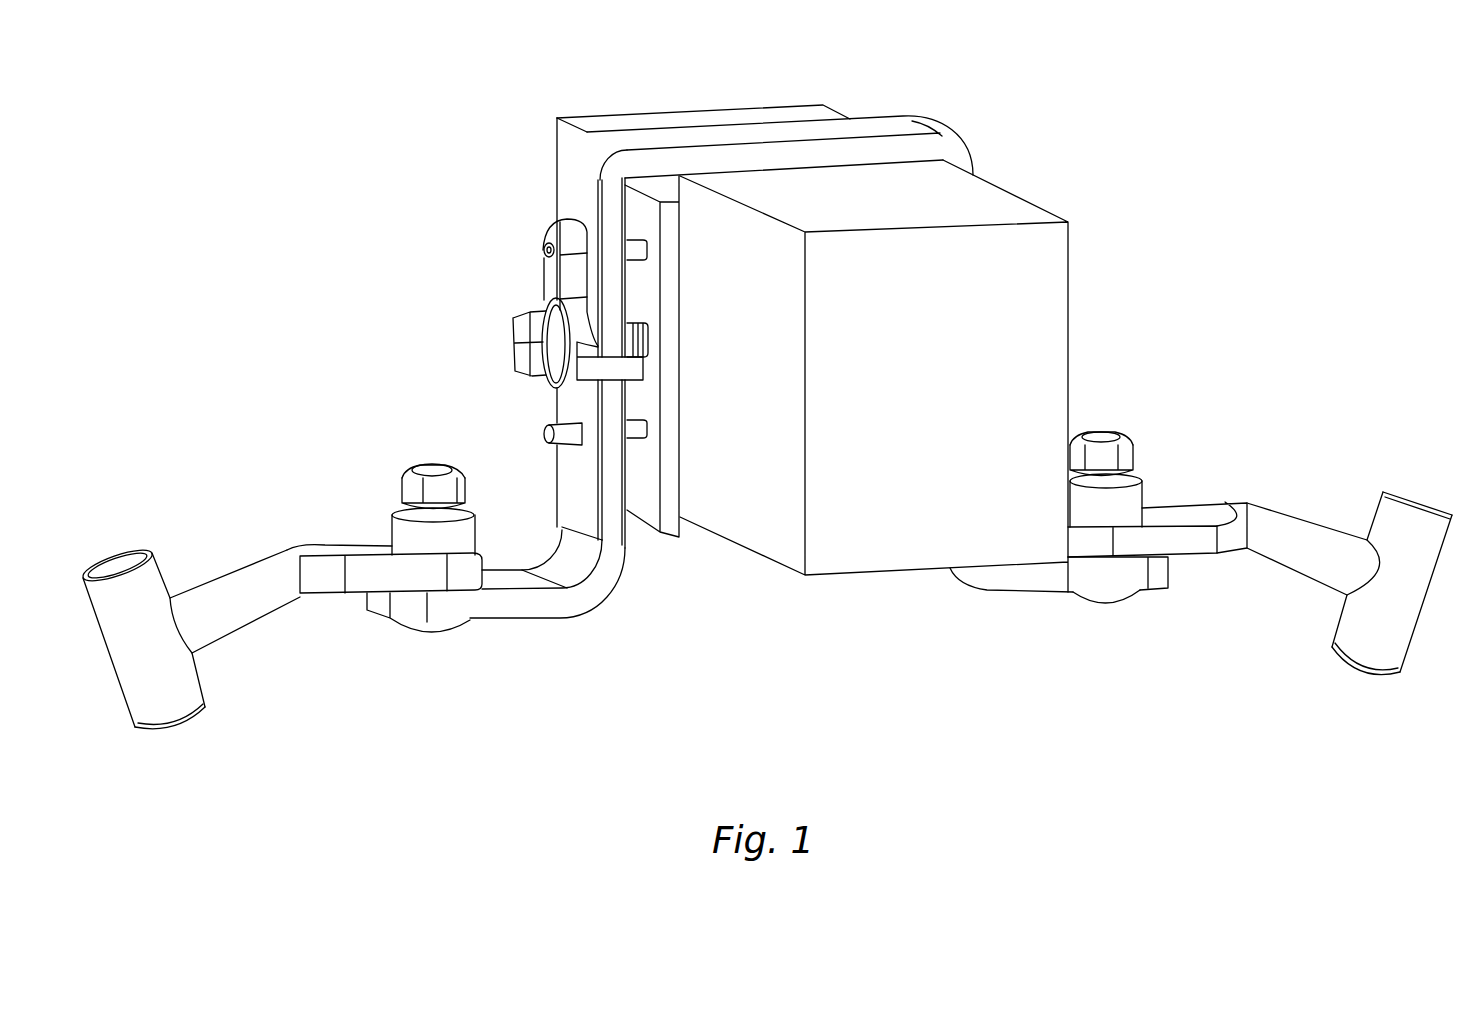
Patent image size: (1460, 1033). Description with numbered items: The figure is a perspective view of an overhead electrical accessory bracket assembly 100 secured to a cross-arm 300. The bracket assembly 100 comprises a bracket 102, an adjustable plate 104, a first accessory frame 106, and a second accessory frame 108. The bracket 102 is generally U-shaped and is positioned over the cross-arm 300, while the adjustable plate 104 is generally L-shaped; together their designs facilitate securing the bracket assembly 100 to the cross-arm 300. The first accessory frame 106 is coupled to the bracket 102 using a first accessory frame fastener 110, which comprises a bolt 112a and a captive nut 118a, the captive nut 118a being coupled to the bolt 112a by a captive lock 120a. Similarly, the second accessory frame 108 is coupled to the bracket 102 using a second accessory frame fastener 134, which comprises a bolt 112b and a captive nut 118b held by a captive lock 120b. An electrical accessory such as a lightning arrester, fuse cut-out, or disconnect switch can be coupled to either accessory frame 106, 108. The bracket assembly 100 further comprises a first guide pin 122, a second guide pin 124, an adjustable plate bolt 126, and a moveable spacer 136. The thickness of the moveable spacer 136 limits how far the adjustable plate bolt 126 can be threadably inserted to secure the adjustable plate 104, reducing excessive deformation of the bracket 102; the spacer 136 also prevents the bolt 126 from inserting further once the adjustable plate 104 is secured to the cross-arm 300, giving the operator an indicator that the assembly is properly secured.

The bracket assembly 100 is at (950, 116).
The bracket 102 is at (577, 140).
The adjustable plate 104 is at (690, 537).
The first accessory frame 106 is at (265, 550).
The second accessory frame 108 is at (1310, 513).
The first accessory frame fastener 110 is at (428, 645).
The bolt 112a is at (470, 627).
The bolt 112b is at (1122, 603).
The captive nut 118a is at (391, 480).
The captive nut 118b is at (1147, 440).
The captive lock 120a is at (390, 542).
The captive lock 120b is at (1146, 502).
The first guide pin 122 is at (540, 250).
The second guide pin 124 is at (568, 427).
The adjustable plate bolt 126 is at (505, 318).
The second accessory frame fastener 134 is at (1107, 622).
The moveable spacer 136 is at (570, 233).
The cross-arm 300 is at (874, 376).